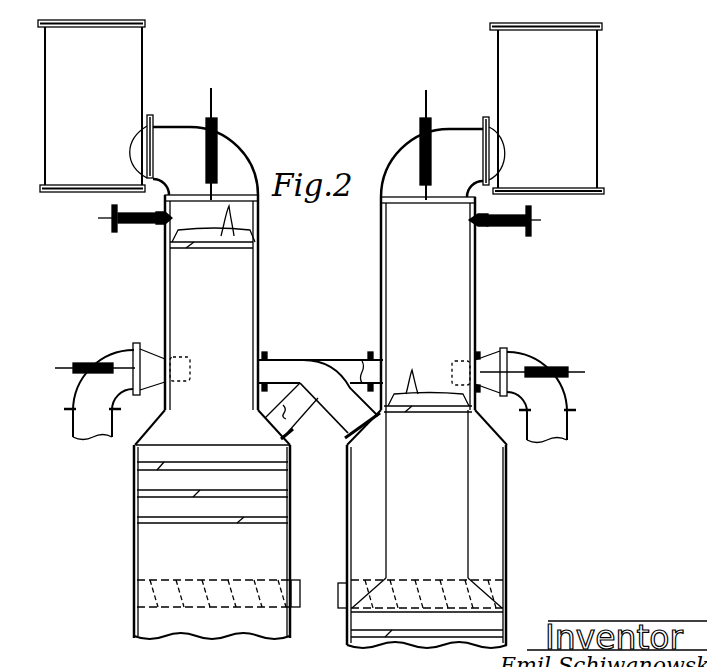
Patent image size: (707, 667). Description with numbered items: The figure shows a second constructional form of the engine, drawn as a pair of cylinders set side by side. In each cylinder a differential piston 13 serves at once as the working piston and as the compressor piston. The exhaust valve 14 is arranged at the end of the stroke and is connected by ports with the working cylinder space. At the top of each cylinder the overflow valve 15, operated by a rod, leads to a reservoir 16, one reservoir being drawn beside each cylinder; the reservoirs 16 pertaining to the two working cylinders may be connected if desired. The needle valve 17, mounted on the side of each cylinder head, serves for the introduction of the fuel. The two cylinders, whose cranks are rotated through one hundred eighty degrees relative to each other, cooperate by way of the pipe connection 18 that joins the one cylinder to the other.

The differential piston 13 is at (248, 303).
The exhaust valve 14 is at (59, 372).
The overflow valve 15 is at (216, 106).
The reservoir 16 is at (45, 176).
The needle valve 17 is at (103, 225).
The pipe connection 18 is at (335, 360).